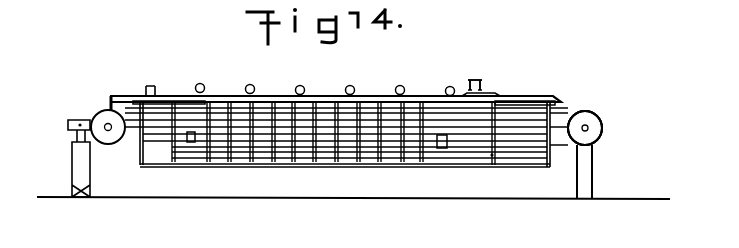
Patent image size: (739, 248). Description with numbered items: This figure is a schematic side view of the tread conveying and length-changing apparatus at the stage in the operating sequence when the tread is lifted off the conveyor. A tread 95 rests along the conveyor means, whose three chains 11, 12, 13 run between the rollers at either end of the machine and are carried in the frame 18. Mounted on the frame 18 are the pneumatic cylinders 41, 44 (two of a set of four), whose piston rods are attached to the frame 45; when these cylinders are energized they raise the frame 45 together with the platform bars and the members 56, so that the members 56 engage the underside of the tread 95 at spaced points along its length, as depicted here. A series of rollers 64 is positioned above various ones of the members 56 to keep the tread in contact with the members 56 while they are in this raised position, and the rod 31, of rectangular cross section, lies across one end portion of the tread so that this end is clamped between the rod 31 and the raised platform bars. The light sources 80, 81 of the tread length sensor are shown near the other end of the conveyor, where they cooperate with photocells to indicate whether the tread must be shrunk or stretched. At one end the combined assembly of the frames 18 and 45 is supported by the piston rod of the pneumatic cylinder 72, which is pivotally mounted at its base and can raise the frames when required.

The chain 11 is at (572, 110).
The chain 12 is at (586, 99).
The chain 13 is at (586, 99).
The frame 18 is at (538, 101).
The rod 31 is at (152, 85).
The pneumatic cylinder 41 is at (189, 143).
The pneumatic cylinder 44 is at (448, 147).
The frame 45 is at (492, 155).
The member 56 is at (420, 133).
The roller 64 is at (203, 84).
The pneumatic cylinder 72 is at (80, 162).
The light source 80 is at (481, 79).
The light source 81 is at (481, 79).
The tread 95 is at (168, 100).